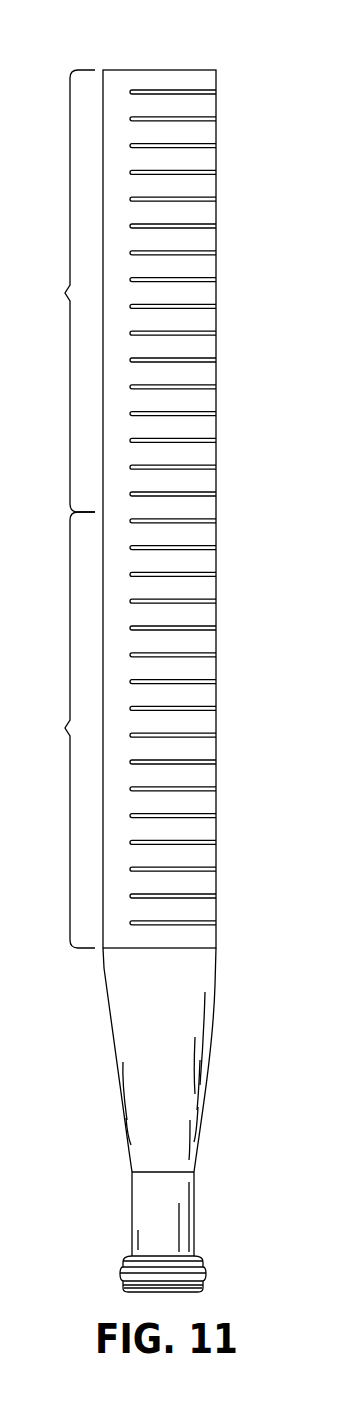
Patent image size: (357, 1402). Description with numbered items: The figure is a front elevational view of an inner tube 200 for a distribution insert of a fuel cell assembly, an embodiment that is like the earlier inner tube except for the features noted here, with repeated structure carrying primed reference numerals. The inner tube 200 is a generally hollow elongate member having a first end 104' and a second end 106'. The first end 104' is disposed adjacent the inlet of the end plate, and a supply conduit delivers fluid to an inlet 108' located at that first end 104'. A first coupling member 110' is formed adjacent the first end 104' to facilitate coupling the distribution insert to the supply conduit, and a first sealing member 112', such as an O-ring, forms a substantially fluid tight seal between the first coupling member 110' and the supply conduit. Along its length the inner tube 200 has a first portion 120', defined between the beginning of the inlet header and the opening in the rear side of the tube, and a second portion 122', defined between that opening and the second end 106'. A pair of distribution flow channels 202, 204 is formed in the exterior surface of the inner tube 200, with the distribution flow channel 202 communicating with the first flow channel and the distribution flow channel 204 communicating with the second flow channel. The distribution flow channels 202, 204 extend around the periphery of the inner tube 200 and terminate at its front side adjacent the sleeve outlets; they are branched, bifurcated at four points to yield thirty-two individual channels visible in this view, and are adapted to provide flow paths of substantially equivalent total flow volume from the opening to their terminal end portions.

The inner tube 200 is at (227, 50).
The second end 106' is at (205, 509).
The distribution flow channel 204 is at (216, 307).
The distribution flow channel 202 is at (216, 737).
The second portion 122' is at (56, 291).
The first portion 120' is at (56, 730).
The first end 104' is at (205, 1102).
The first coupling member 110' is at (215, 1251).
The first sealing member 112' is at (214, 1283).
The inlet 108' is at (118, 1294).